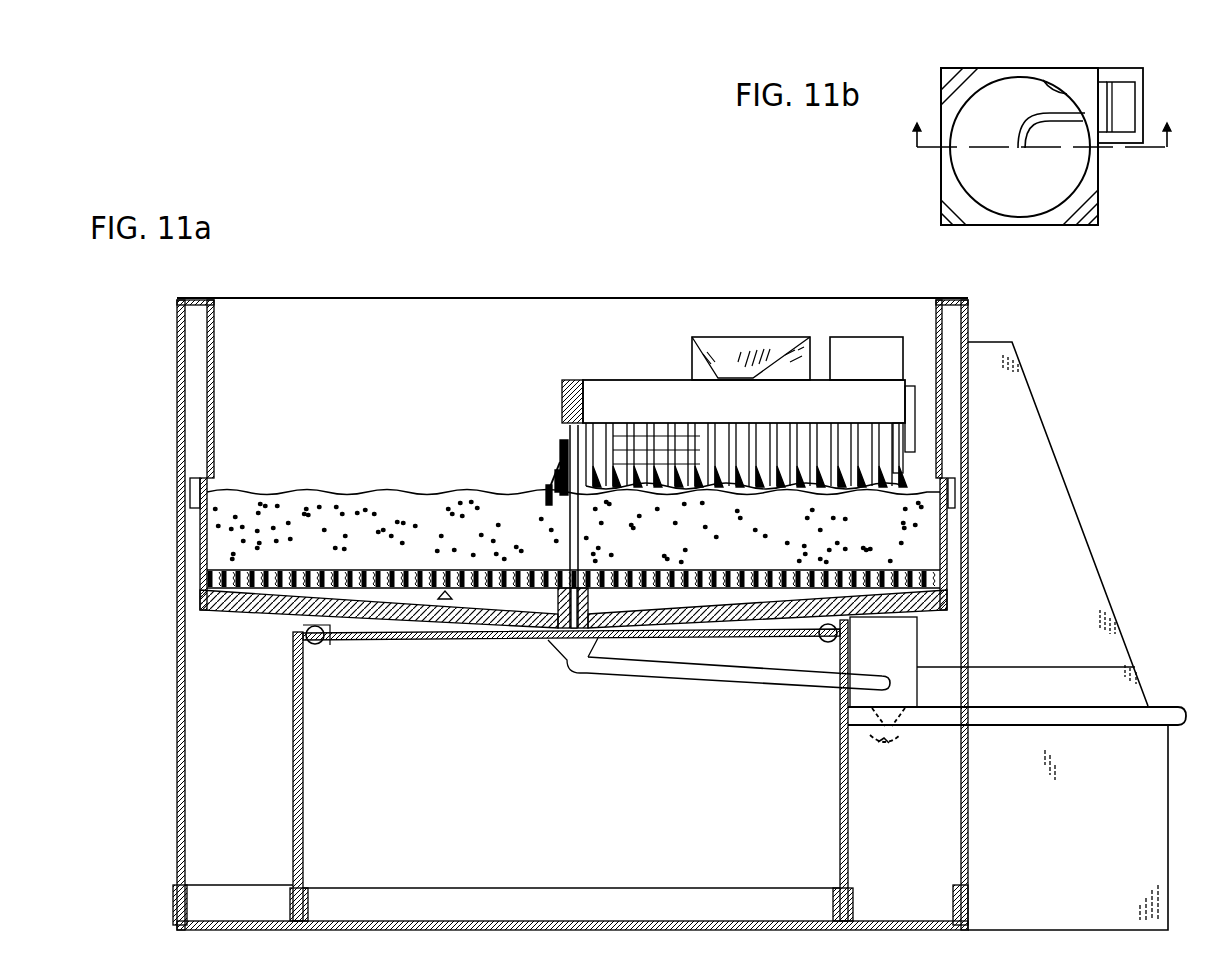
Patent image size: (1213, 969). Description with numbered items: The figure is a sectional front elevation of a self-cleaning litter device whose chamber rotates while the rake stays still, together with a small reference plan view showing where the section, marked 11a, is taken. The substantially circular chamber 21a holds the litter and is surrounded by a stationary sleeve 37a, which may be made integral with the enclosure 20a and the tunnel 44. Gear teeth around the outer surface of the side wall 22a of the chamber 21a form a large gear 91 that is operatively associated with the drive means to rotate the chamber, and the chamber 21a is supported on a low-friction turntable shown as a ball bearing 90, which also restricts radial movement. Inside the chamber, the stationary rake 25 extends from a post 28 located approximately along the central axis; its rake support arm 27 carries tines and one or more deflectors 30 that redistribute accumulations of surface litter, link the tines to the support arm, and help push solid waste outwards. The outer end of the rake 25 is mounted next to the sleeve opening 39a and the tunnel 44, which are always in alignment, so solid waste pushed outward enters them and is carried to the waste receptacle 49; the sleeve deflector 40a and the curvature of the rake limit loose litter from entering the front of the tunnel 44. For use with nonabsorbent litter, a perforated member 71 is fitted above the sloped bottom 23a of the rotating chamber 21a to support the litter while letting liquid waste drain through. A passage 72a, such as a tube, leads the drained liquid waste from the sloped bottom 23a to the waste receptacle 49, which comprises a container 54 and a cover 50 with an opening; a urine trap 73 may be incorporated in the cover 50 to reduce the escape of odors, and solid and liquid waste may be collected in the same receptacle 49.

In FIG. 11a, the enclosure 20a is at (178, 403).
In FIG. 11a, the sleeve 37a is at (214, 440).
In FIG. 11a, the large gear 91 is at (191, 480).
In FIG. 11a, the side wall 22a is at (207, 523).
In FIG. 11a, the chamber 21a is at (200, 600).
In FIG. 11a, the perforated member 71 is at (372, 567).
In FIG. 11a, the post 28 is at (562, 442).
In FIG. 11a, the rake 25 is at (713, 350).
In FIG. 11a, the rake support arm 27 is at (665, 403).
In FIG. 11a, the sleeve deflector 40a is at (692, 362).
In FIG. 11a, the sleeve opening 39a is at (867, 357).
In FIG. 11a, the tunnel 44 is at (849, 304).
In FIG. 11a, the deflectors 30 is at (794, 446).
In FIG. 11a, the cover 50 is at (1040, 502).
In FIG. 11a, the sloped bottom 23a is at (415, 630).
In FIG. 11a, the passage 72a is at (652, 672).
In FIG. 11a, the urine trap 73 is at (880, 746).
In FIG. 11a, the waste receptacle 49 is at (1077, 858).
In FIG. 11a, the container 54 is at (1017, 773).
In FIG. 11a, the ball bearing 90 is at (296, 660).
In FIG. 11b, the section line 11a is at (1041, 120).